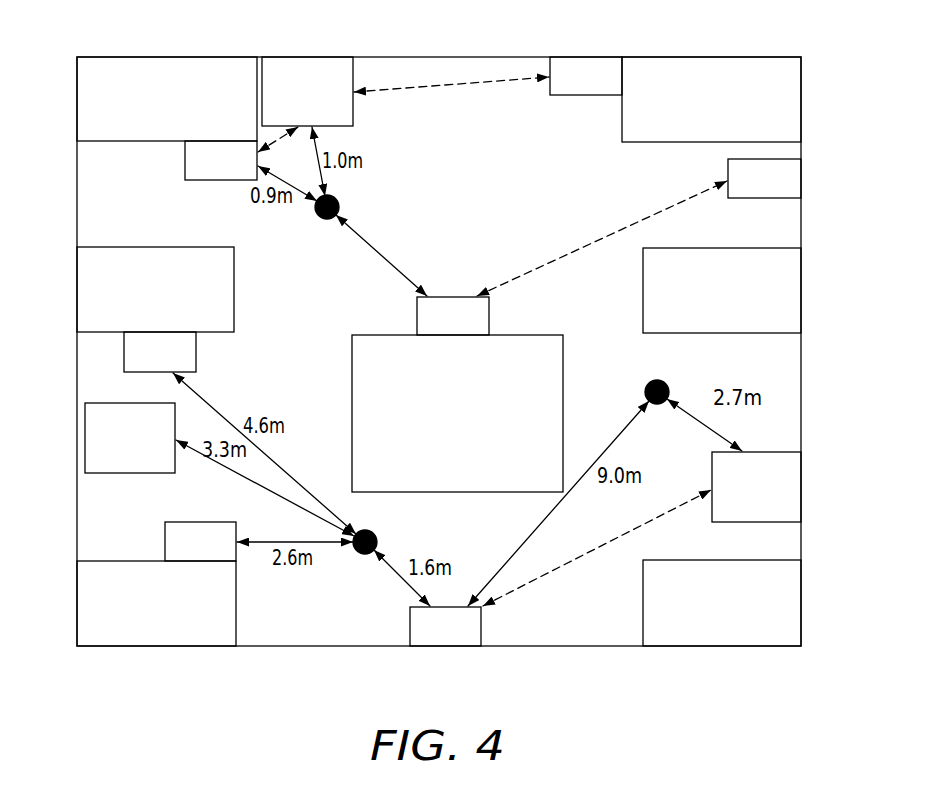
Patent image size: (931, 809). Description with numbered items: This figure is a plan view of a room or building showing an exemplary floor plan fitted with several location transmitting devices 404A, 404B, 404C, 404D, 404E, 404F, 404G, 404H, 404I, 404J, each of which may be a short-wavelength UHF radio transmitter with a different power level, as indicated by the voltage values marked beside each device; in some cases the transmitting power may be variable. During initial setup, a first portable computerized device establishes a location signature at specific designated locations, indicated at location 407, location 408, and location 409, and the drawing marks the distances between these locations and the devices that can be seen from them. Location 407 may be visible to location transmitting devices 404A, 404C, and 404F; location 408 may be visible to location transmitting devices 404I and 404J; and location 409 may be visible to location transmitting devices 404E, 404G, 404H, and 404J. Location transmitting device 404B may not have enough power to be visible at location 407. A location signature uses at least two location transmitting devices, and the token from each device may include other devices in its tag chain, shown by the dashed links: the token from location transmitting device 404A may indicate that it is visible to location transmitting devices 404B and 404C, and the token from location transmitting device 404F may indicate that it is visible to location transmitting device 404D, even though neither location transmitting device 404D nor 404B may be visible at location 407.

The location transmitting device 404A is at (298, 57).
The location transmitting device 404B is at (595, 56).
The location transmitting device 404C is at (185, 162).
The location transmitting device 404D is at (802, 183).
The location transmitting device 404E is at (197, 353).
The location transmitting device 404F is at (490, 315).
The location transmitting device 404G is at (85, 440).
The location transmitting device 404H is at (165, 538).
The location transmitting device 404I is at (802, 487).
The location transmitting device 404J is at (445, 647).
The location 407 is at (340, 206).
The location 408 is at (667, 385).
The location 409 is at (377, 537).